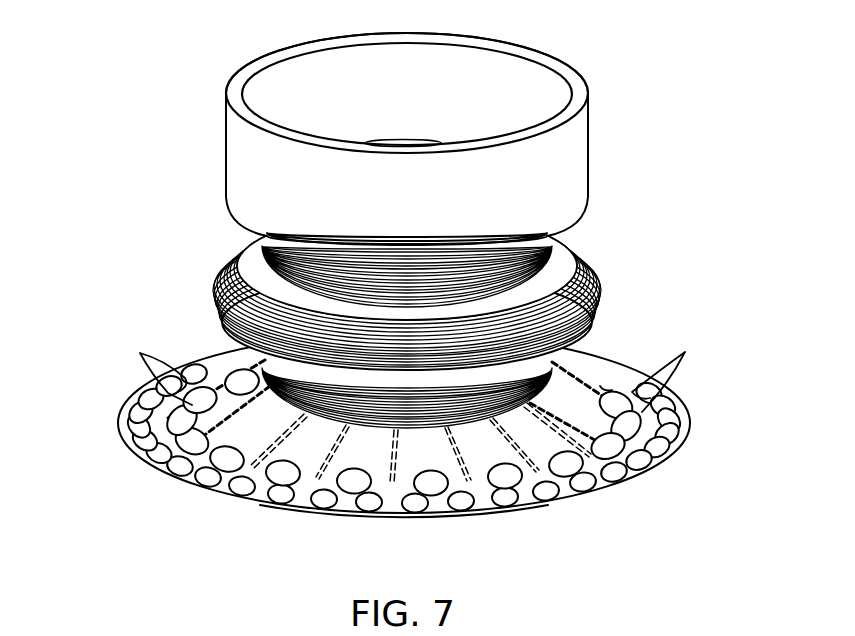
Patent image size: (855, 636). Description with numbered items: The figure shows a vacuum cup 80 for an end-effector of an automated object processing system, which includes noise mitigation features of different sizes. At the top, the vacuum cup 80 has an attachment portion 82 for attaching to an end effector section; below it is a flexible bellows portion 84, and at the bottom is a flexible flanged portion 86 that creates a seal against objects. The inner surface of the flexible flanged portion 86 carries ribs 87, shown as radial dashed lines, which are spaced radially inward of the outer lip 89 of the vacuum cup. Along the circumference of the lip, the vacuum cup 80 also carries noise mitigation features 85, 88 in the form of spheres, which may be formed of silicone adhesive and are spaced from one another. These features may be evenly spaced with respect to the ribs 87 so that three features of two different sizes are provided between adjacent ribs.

The vacuum cup 80 is at (122, 88).
The attachment portion 82 is at (585, 95).
The flexible bellows portion 84 is at (600, 283).
The noise mitigation features 85 is at (414, 363).
The flexible flanged portion 86 is at (600, 386).
The ribs 87 is at (369, 508).
The noise mitigation features 88 is at (147, 445).
The outer lip 89 is at (637, 482).